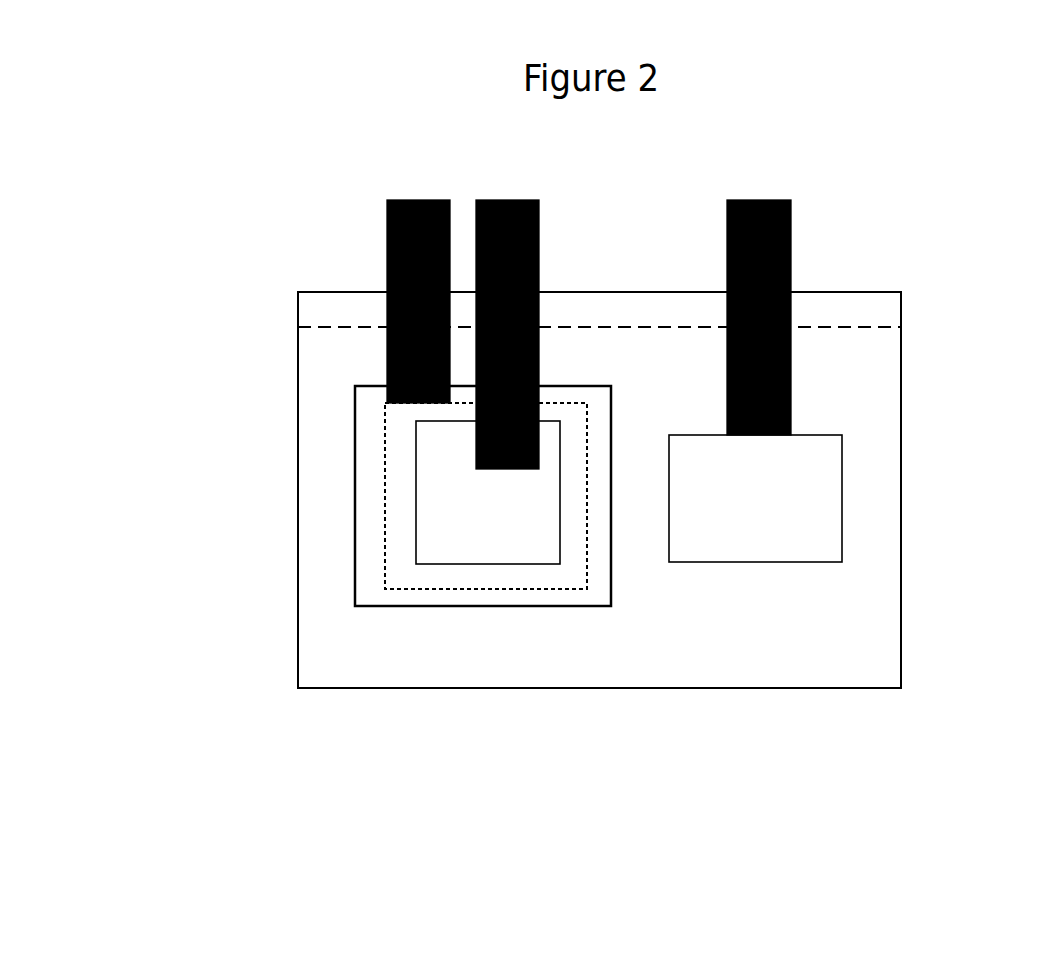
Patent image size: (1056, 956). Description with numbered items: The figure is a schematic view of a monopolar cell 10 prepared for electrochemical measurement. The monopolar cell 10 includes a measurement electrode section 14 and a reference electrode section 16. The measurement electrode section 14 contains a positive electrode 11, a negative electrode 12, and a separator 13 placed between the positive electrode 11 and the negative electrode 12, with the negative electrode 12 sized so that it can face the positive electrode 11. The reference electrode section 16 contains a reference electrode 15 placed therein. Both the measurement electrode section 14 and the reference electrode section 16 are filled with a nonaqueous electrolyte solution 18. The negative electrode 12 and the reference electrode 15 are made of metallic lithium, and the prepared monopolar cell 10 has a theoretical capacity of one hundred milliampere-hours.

The monopolar cell 10 is at (607, 819).
The positive electrode 11 is at (492, 518).
The negative electrode 12 is at (385, 438).
The separator 13 is at (385, 496).
The measurement electrode section 14 is at (563, 172).
The reference electrode 15 is at (776, 497).
The reference electrode section 16 is at (668, 172).
The nonaqueous electrolyte solution 18 is at (742, 628).